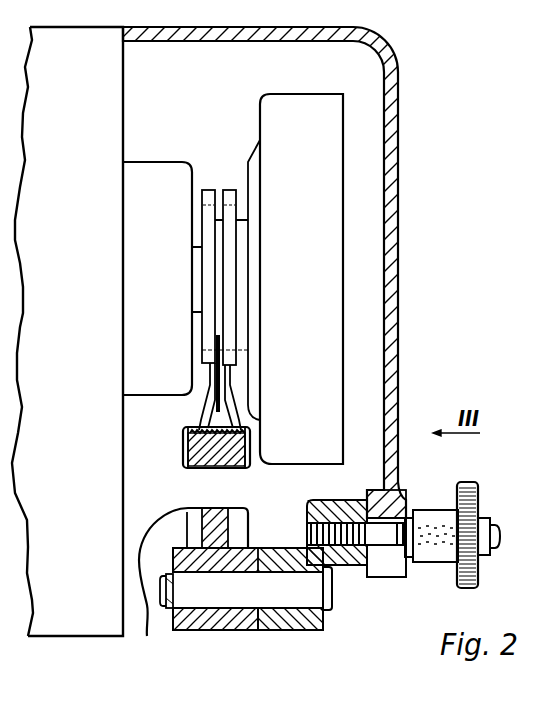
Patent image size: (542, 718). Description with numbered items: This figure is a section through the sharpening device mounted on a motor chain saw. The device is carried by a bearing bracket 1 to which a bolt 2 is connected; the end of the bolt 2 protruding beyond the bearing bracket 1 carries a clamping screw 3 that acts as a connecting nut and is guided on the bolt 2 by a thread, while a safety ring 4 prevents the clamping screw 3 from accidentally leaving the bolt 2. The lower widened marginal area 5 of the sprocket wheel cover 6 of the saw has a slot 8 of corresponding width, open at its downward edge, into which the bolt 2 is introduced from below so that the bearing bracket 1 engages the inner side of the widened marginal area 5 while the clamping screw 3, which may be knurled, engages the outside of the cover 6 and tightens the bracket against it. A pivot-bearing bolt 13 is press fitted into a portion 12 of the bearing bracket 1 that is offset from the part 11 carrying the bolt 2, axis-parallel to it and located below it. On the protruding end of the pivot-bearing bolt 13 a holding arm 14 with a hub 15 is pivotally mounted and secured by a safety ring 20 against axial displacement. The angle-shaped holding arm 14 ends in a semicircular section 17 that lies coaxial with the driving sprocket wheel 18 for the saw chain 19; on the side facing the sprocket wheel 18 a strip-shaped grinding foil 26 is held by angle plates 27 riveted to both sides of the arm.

The bearing bracket 1 is at (308, 620).
The bolt 2 is at (333, 578).
The clamping screw 3 is at (441, 560).
The safety ring 4 is at (488, 548).
The widened marginal area 5 is at (396, 502).
The sprocket wheel cover 6 is at (396, 293).
The slot 8 is at (393, 566).
The part carrying the screw 11 is at (345, 507).
The portion of the bearing bracket 12 is at (272, 620).
The pivot-bearing bolt 13 is at (217, 604).
The holding arm 14 is at (215, 530).
The hub 15 is at (186, 618).
The semicircular section 17 is at (204, 466).
The driving sprocket wheel 18 is at (260, 282).
The saw chain 19 is at (220, 384).
The safety ring 20 is at (165, 608).
The grinding foil 26 is at (233, 428).
The angle plates 27 is at (183, 447).